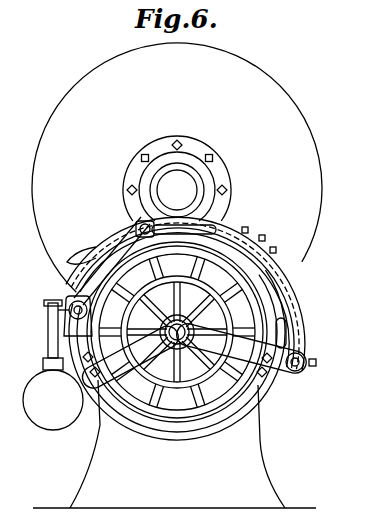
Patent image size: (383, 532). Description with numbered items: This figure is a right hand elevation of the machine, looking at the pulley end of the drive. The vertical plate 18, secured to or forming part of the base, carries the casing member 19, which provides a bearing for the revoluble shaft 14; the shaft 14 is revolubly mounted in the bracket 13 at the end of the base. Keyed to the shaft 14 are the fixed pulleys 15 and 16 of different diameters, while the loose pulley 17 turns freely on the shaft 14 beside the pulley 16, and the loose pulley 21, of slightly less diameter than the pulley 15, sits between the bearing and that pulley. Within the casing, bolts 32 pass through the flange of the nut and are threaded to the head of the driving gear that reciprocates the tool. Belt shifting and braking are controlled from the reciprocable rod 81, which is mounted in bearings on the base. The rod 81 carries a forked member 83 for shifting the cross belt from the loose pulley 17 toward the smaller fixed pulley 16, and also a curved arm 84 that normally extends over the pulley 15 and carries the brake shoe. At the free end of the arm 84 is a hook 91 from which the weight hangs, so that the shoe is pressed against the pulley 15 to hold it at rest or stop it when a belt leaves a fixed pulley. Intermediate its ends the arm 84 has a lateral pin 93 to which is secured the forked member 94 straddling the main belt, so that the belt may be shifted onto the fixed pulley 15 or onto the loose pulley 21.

The casing member 19 is at (238, 66).
The vertical plate 18 is at (183, 183).
The curved arm 84 is at (300, 303).
The forked member 83 is at (246, 268).
The bolts 32 is at (248, 230).
The loose pulley 21 is at (240, 412).
The pulley 15 is at (177, 356).
The pulley 17 is at (177, 382).
The bracket 13 is at (154, 339).
The shaft 14 is at (190, 342).
The pulley 16 is at (262, 386).
The reciprocable rod 81 is at (302, 368).
The lateral projection or pin 93 is at (139, 232).
The forked member 94 is at (82, 262).
The hook 91 is at (44, 307).